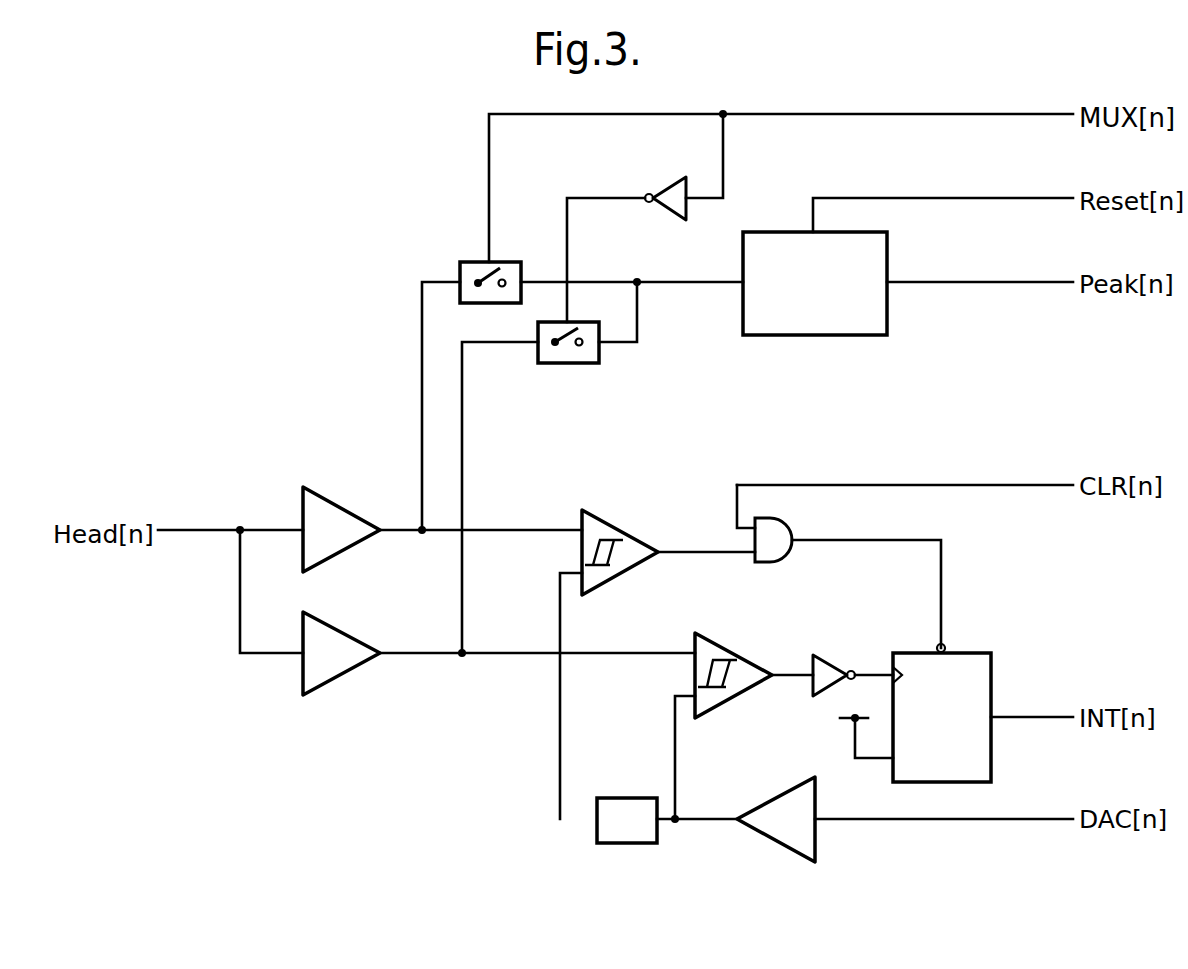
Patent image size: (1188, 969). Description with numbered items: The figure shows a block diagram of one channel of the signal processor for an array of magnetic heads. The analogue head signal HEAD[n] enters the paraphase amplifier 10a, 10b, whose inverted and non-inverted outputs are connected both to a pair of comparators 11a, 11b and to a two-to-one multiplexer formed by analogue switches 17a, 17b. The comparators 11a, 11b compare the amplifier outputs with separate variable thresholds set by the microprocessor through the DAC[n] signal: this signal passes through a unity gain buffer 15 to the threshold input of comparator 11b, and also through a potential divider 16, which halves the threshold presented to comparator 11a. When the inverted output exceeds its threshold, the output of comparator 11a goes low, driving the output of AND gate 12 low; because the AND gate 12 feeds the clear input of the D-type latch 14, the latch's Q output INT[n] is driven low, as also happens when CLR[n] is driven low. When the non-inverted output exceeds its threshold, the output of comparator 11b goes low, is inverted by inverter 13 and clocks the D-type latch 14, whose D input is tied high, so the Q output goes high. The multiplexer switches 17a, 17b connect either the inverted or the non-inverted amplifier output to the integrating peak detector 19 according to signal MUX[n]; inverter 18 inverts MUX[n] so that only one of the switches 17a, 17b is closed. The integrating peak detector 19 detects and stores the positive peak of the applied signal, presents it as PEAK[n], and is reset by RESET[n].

The paraphase amplifier 10a is at (323, 510).
The paraphase amplifier 10b is at (352, 655).
The comparator 11a is at (593, 527).
The comparator 11b is at (748, 668).
The AND gate 12 is at (778, 550).
The inverter 13 is at (827, 672).
The D-type latch 14 is at (980, 688).
The unity gain buffer 15 is at (780, 803).
The potential divider 16 is at (620, 803).
The analogue switch 17a is at (475, 267).
The analogue switch 17b is at (568, 363).
The inverter 18 is at (668, 190).
The integrating peak detector 19 is at (875, 335).